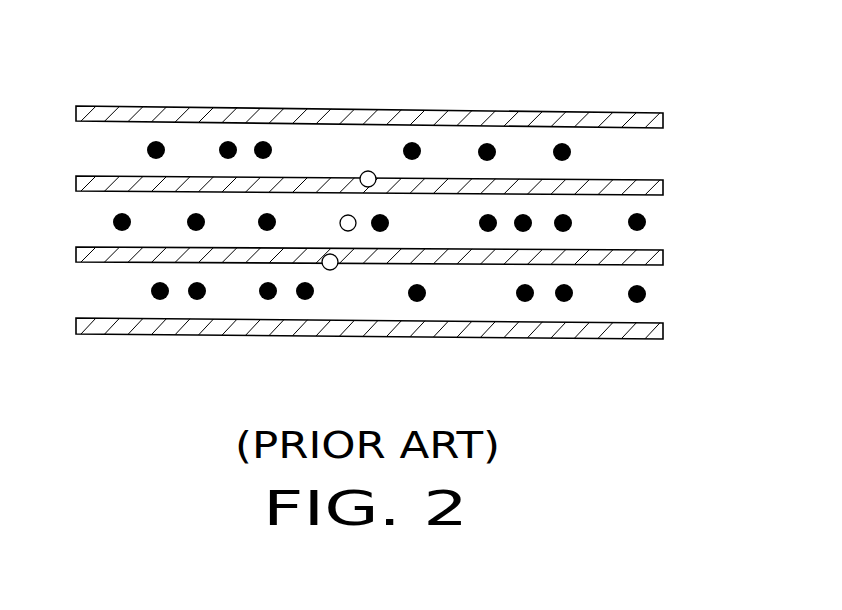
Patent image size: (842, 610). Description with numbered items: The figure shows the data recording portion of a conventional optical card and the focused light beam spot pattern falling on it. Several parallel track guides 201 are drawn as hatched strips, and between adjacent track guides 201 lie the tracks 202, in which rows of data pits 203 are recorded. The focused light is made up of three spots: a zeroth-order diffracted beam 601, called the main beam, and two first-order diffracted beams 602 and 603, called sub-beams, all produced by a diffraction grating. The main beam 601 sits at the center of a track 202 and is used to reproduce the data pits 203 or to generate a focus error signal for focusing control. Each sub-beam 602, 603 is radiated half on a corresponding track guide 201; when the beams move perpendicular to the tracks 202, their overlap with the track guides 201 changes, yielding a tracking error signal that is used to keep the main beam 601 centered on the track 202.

The track guide 201 is at (592, 108).
The track 202 is at (648, 152).
The data pit 203 is at (487, 143).
The 0th-order diffracted beam 601 is at (350, 231).
The 1st-order diffracted beam 602 is at (366, 171).
The 1st-order diffracted beam 603 is at (330, 270).